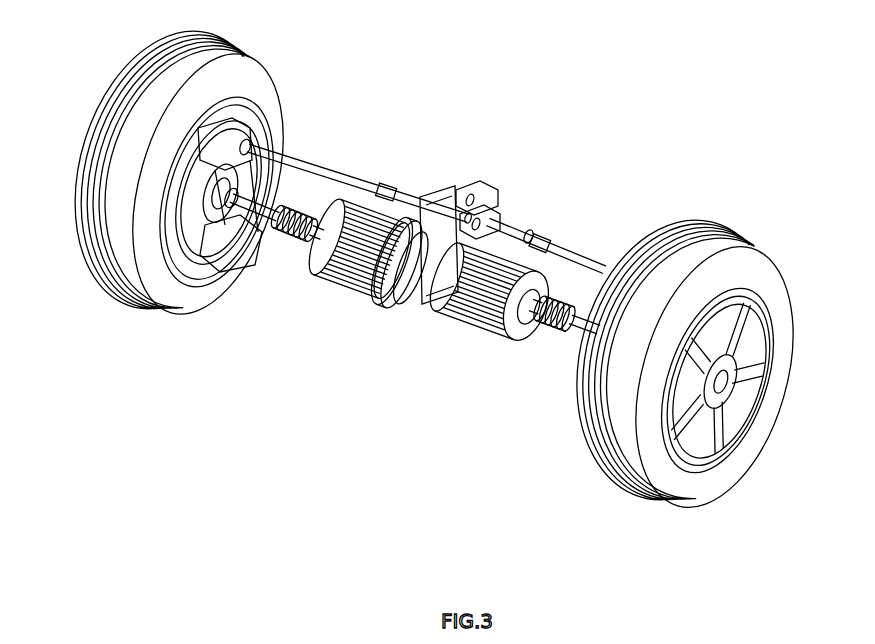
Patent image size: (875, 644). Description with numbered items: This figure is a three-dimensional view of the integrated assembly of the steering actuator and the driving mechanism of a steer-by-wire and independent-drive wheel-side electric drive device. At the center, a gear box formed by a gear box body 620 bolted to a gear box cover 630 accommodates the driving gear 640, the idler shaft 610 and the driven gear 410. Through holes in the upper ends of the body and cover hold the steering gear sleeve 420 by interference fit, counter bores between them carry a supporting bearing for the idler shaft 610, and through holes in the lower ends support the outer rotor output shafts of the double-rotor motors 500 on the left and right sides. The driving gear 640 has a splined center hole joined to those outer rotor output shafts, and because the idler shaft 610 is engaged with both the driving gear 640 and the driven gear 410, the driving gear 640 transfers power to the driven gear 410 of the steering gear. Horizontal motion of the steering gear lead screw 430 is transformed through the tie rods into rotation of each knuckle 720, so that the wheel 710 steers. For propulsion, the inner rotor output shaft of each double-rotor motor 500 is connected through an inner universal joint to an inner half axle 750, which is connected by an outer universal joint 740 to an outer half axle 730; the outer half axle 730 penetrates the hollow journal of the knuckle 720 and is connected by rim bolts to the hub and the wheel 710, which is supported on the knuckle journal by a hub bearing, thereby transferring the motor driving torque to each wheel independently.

The driven gear 410 is at (500, 202).
The steering gear sleeve 420 is at (495, 220).
The steering gear lead screw 430 is at (540, 242).
The double-rotor motor 500 is at (392, 297).
The idler shaft 610 is at (473, 328).
The gear box body 620 is at (507, 337).
The gear box cover 630 is at (520, 340).
The driving gear 640 is at (452, 320).
The wheel 710 is at (150, 268).
The knuckle 720 is at (203, 285).
The outer half axle 730 is at (222, 262).
The outer universal joint 740 is at (303, 238).
The inner half axle 750 is at (443, 313).